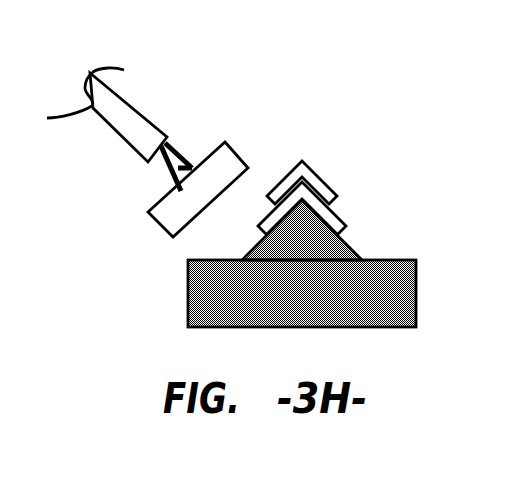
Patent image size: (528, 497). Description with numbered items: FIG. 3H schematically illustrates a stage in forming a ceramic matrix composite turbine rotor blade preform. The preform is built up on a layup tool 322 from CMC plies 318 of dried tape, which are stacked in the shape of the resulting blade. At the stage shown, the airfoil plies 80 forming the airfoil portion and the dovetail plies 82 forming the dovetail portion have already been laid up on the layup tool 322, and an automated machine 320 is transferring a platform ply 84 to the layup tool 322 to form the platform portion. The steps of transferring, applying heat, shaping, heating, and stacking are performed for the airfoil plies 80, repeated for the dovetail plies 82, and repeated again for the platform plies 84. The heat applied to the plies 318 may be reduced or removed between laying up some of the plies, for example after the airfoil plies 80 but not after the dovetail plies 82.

The automated machine 320 is at (105, 110).
The platform plies 84 is at (228, 160).
The dovetail plies 82 is at (310, 180).
The plies 318 is at (347, 180).
The airfoil plies 80 is at (335, 220).
The layup tool 322 is at (407, 283).